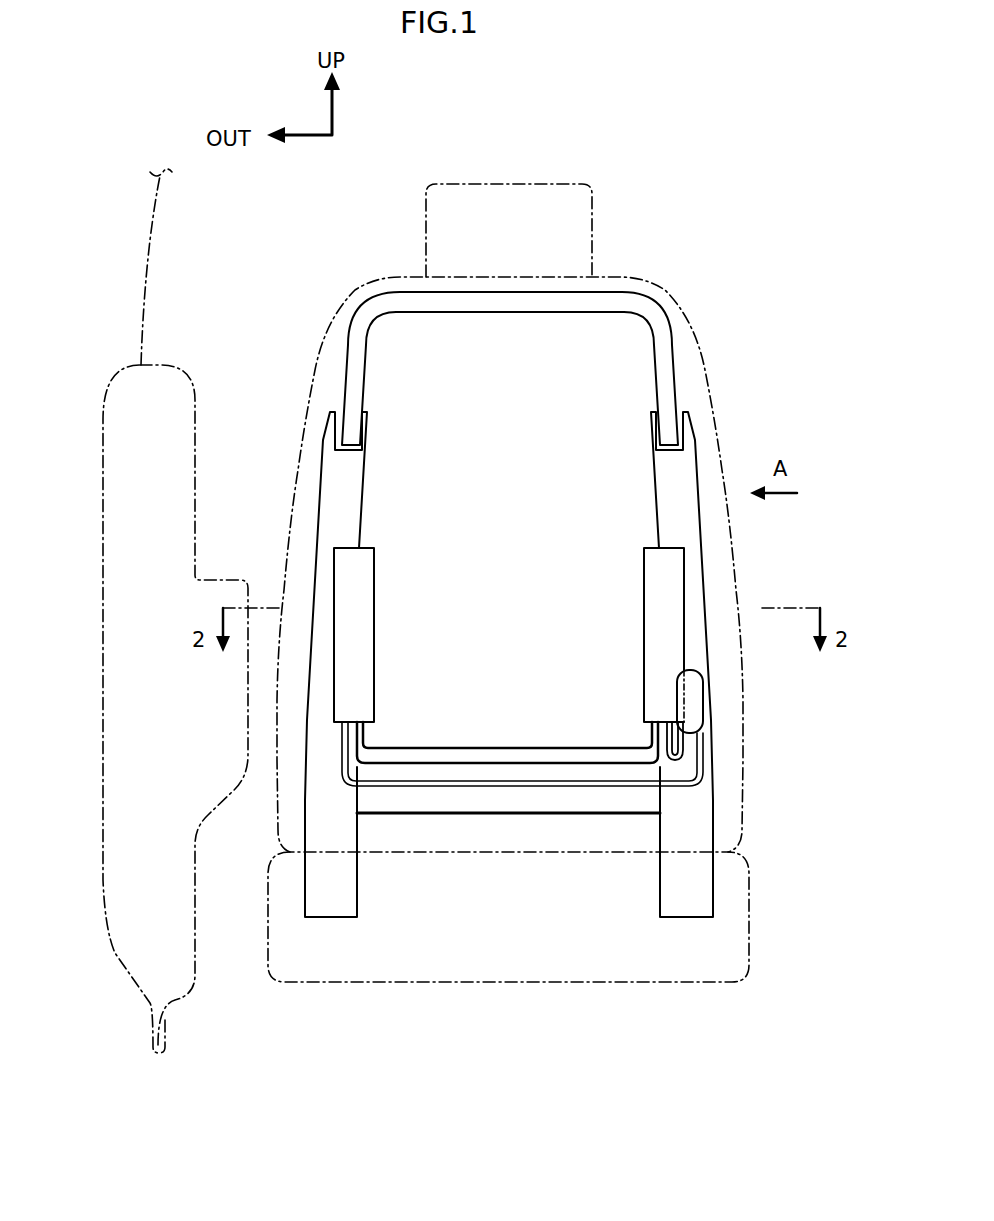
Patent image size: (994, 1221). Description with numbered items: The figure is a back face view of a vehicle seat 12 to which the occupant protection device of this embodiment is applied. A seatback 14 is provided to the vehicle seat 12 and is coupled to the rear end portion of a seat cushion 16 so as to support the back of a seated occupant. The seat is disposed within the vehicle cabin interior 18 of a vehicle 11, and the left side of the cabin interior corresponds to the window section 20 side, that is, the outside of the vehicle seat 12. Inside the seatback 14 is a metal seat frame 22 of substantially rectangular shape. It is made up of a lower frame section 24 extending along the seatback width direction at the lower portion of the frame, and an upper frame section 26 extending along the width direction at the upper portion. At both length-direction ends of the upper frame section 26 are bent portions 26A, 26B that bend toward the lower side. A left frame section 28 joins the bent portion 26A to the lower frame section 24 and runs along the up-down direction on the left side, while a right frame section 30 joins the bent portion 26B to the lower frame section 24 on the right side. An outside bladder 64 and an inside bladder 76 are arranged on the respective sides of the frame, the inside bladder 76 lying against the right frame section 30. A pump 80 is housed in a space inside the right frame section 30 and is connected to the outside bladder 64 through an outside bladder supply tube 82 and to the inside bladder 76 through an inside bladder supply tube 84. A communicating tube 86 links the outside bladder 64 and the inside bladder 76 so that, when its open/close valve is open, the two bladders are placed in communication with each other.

The vehicle 11 is at (125, 175).
The vehicle seat 12 is at (547, 576).
The seatback 14 is at (718, 432).
The seat cushion 16 is at (749, 916).
The vehicle cabin interior 18 is at (818, 378).
The window section 20 is at (140, 338).
The seat frame 22 is at (544, 363).
The lower frame section 24 is at (507, 724).
The upper frame section 26 is at (503, 314).
The bent portion 26A is at (362, 371).
The bent portion 26B is at (660, 371).
The left frame section 28 is at (352, 487).
The right frame section 30 is at (662, 491).
The outside bladder 64 is at (365, 626).
The inside bladder 76 is at (660, 627).
The pump 80 is at (692, 688).
The outside bladder supply tube 82 is at (533, 788).
The inside bladder supply tube 84 is at (675, 760).
The communicating tube 86 is at (567, 763).